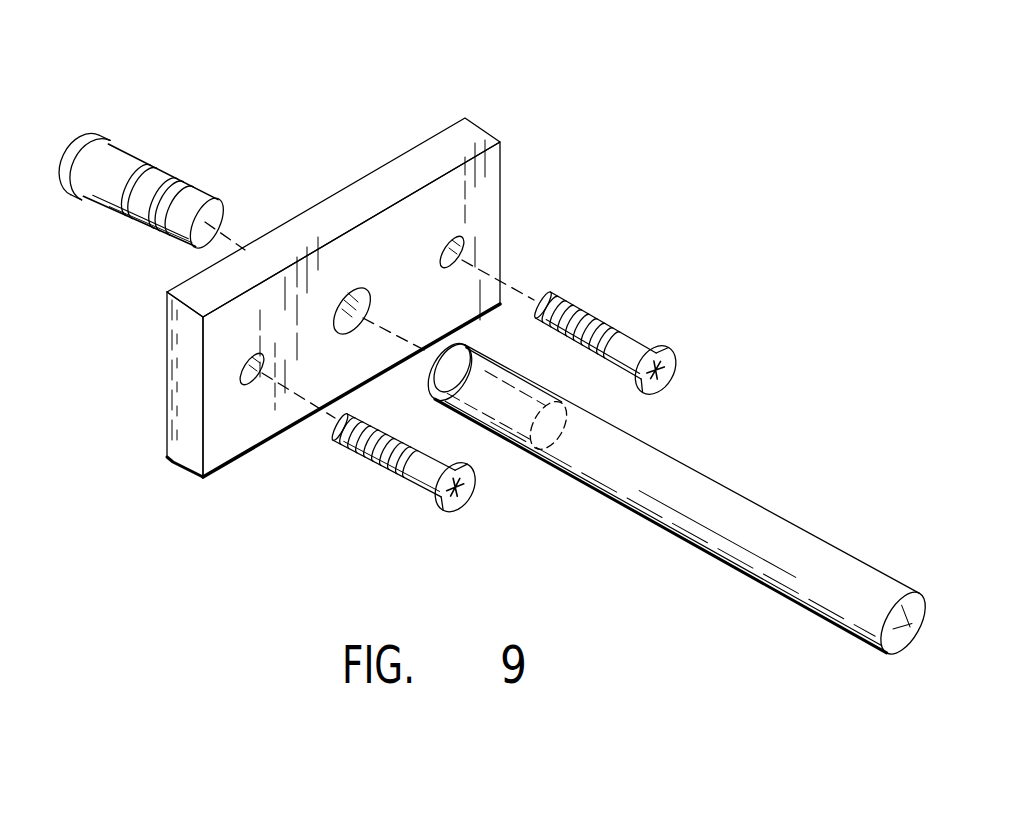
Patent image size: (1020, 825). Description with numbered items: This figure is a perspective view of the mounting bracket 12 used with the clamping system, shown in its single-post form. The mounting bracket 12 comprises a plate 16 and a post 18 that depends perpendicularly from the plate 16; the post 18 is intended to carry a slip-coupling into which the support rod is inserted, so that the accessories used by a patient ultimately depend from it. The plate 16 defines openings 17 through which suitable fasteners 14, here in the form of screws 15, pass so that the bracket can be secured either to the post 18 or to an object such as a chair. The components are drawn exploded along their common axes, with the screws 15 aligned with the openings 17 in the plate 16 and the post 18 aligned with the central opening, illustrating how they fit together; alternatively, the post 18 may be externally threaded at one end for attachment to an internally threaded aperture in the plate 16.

The mounting bracket 12 is at (333, 116).
The fasteners 14 is at (344, 472).
The screws 15 is at (633, 345).
The plate 16 is at (409, 257).
The opening 17 is at (451, 268).
The post 18 is at (696, 509).